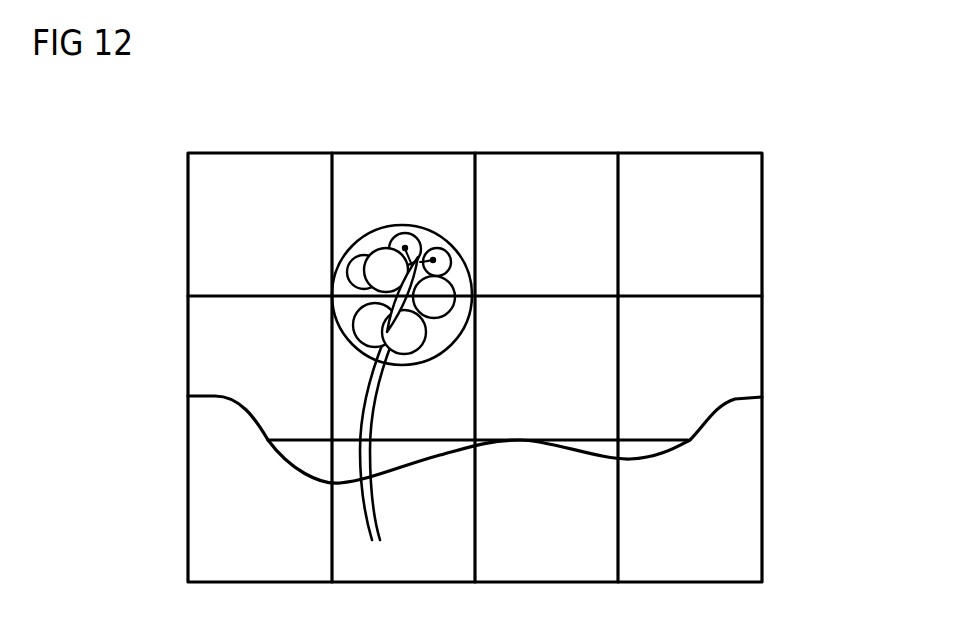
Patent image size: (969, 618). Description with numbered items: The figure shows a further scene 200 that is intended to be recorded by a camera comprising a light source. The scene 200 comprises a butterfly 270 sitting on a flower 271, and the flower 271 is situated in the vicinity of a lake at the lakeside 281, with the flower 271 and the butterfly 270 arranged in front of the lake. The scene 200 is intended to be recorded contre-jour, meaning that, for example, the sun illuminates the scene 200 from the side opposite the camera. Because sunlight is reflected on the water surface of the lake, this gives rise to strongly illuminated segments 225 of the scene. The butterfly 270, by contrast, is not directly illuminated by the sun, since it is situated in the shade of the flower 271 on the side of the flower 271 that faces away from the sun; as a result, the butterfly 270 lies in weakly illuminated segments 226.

The further scene 200 is at (812, 118).
The strongly illuminated segments 225 is at (403, 162).
The weakly illuminated segments 226 is at (342, 278).
The butterfly 270 is at (405, 295).
The flower 271 is at (453, 310).
The lakeside 281 is at (752, 509).